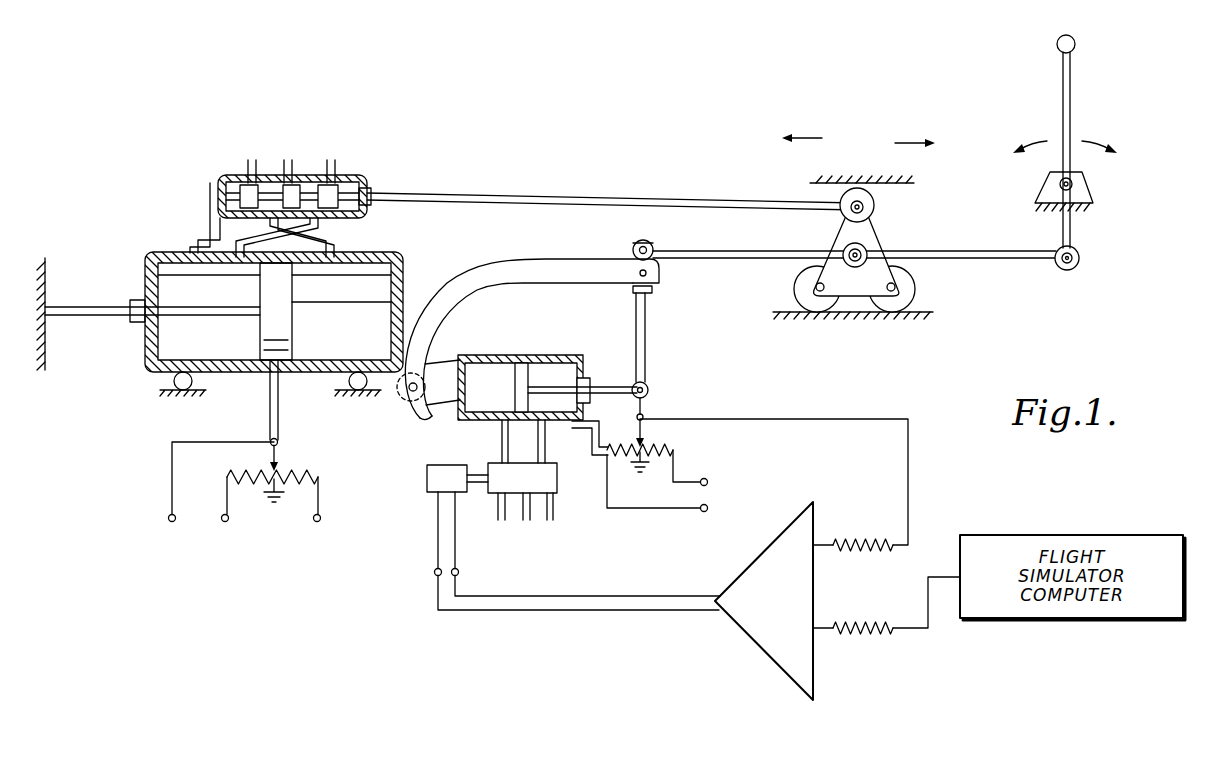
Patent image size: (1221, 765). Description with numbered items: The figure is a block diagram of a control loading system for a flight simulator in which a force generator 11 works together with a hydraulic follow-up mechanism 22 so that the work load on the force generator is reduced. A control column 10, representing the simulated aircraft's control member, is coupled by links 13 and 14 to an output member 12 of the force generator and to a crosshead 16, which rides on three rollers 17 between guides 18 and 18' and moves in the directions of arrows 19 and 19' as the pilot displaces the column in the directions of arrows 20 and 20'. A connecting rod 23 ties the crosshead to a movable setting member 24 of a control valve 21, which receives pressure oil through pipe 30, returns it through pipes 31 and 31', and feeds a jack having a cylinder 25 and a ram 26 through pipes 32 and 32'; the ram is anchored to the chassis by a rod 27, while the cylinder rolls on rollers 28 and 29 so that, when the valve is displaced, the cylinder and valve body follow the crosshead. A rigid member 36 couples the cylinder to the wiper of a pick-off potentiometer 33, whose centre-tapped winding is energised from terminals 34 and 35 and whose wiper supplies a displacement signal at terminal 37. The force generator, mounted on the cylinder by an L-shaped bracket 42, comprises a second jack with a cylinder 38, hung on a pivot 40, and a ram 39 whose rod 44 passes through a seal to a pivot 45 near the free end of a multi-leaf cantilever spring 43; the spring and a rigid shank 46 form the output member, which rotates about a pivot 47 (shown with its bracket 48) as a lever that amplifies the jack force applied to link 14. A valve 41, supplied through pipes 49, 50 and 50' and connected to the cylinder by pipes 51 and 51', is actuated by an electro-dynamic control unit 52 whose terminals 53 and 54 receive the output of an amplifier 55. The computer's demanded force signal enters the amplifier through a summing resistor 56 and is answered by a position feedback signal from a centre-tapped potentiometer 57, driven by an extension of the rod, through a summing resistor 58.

The control column 10 is at (1072, 80).
The force generator 11 is at (516, 312).
The output member 12 is at (632, 252).
The link 13 is at (1027, 262).
The link 14 is at (765, 251).
The crosshead 16 is at (852, 300).
The rollers 17 is at (855, 261).
The guide 18 is at (867, 332).
The guide 18' is at (886, 187).
The arrow 19 is at (802, 125).
The arrow 19' is at (916, 128).
The arrow 20 is at (1103, 135).
The arrow 20' is at (1029, 132).
The control valve 21 is at (222, 178).
The hydraulic follow-up mechanism 22 is at (95, 380).
The connecting rod 23 is at (512, 196).
The movable setting member 24 is at (360, 182).
The cylinder 25 is at (178, 252).
The ram 26 is at (266, 373).
The rod 27 is at (100, 306).
The roller 28 is at (162, 389).
The roller 29 is at (350, 389).
The pipe 30 is at (288, 160).
The pipe 31 is at (240, 154).
The pipe 31' is at (348, 154).
The pipe 32 is at (298, 220).
The pipe 32' is at (338, 237).
The potentiometer 33 is at (302, 471).
The terminal 34 is at (221, 518).
The terminal 35 is at (321, 518).
The rigid member 36 is at (268, 419).
The terminal 37 is at (168, 518).
The cylinder 38 is at (503, 355).
The ram 39 is at (530, 368).
The pivot 40 is at (405, 400).
The valve 41 is at (492, 494).
The L-shaped bracket 42 is at (530, 266).
The multi-leaf cantilever spring 43 is at (650, 317).
The rod 44 is at (608, 386).
The pivot 45 is at (648, 388).
The rigid shank 46 is at (633, 290).
The pivot 47 is at (648, 274).
The pivot bracket 48 is at (654, 247).
The pipe 49 is at (530, 521).
The pipe 50 is at (501, 525).
The pipe 50' is at (572, 510).
The pipe 51 is at (482, 441).
The pipe 51' is at (560, 441).
The electro-dynamic control unit 52 is at (427, 480).
The terminal 53 is at (434, 572).
The terminal 54 is at (459, 572).
The amplifier 55 is at (763, 614).
The summing resistor 56 is at (886, 605).
The centre-tapped potentiometer 57 is at (676, 450).
The summing resistor 58 is at (774, 485).